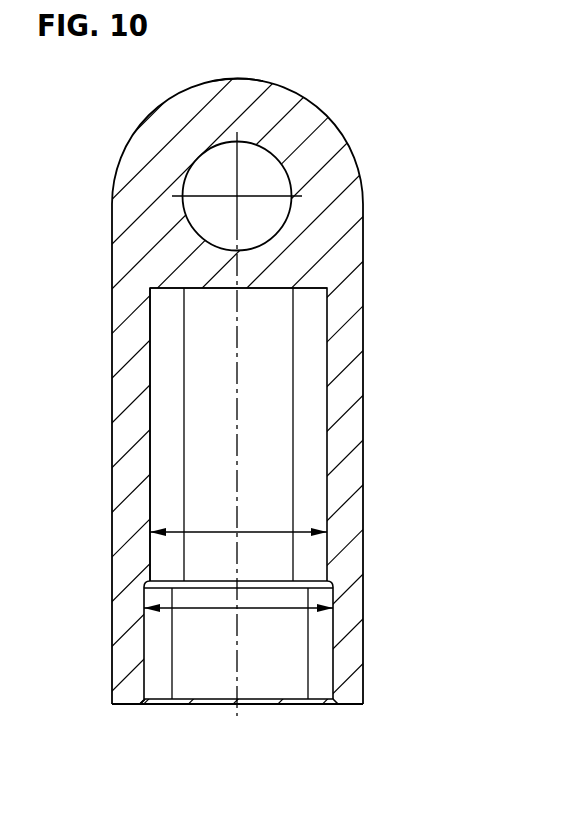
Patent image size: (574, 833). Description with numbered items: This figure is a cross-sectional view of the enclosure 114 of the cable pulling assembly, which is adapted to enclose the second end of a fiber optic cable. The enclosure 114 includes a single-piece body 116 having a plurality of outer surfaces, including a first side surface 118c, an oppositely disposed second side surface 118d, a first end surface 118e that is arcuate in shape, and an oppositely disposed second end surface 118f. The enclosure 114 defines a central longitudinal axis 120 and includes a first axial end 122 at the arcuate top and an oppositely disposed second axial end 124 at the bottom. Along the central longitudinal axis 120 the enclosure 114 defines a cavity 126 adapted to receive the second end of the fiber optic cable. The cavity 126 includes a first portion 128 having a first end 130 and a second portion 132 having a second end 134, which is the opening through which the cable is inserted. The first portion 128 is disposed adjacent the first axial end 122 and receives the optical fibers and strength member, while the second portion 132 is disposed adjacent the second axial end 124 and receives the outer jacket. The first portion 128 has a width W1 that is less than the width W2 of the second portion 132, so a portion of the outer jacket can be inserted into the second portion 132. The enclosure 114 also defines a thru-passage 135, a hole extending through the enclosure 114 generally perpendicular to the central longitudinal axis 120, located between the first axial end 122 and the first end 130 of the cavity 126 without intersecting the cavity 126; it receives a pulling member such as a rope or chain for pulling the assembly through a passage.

The enclosure 114 is at (380, 216).
The body 116 is at (371, 268).
The first side surface 118c is at (363, 470).
The second side surface 118d is at (113, 448).
The first end surface 118e is at (258, 80).
The second end surface 118f is at (128, 707).
The central longitudinal axis 120 is at (240, 682).
The first axial end 122 is at (312, 102).
The second axial end 124 is at (353, 707).
The cavity 126 is at (313, 435).
The first portion 128 is at (148, 379).
The first end 130 is at (217, 289).
The second portion 132 is at (333, 623).
The second end 134 is at (332, 677).
The thru-passage 135 is at (193, 232).
The width W1 is at (260, 530).
The width W2 is at (258, 610).